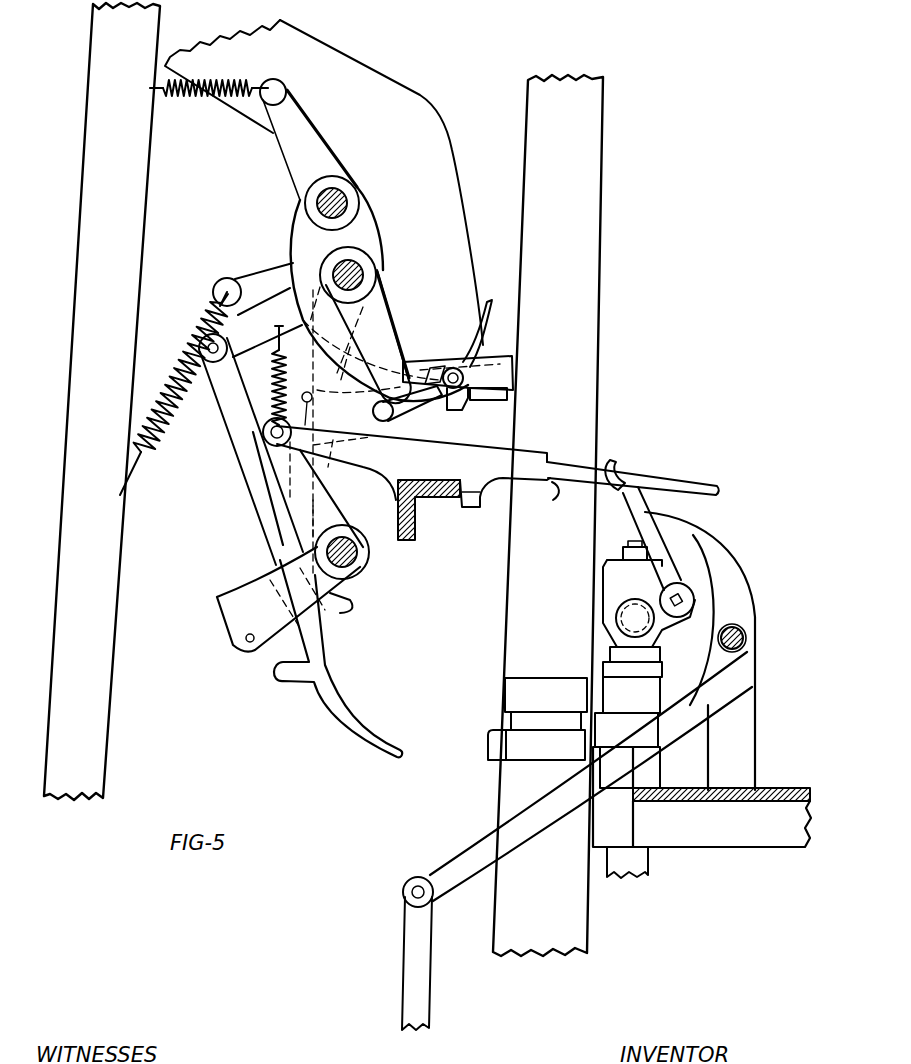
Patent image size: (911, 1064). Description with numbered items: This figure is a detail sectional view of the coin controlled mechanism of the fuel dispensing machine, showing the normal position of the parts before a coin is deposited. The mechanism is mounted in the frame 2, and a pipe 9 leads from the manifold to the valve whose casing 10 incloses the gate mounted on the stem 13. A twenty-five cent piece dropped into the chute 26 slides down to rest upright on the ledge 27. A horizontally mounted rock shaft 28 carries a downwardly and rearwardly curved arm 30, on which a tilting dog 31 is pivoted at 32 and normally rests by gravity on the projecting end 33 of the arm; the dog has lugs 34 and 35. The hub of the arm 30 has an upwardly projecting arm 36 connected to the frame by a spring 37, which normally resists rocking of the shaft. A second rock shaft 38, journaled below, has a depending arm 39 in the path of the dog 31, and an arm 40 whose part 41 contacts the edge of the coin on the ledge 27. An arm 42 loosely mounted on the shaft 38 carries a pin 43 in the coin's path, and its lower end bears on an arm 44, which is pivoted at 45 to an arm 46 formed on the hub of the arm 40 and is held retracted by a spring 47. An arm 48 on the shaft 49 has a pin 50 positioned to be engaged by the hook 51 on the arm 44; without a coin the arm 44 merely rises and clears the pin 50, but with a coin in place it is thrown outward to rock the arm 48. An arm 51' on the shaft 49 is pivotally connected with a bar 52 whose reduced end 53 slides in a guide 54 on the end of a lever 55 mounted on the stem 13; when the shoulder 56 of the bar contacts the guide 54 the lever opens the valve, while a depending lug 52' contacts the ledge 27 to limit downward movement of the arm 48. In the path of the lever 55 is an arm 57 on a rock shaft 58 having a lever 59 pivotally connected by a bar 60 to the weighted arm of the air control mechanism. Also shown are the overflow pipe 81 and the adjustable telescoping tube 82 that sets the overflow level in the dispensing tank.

The frame 2 is at (106, 620).
The pipes 9 is at (652, 866).
The casing 10 is at (605, 592).
The stem 13 is at (680, 597).
The chute 26 is at (405, 107).
The ledge 27 is at (370, 462).
The rock shaft 28 is at (318, 203).
The arm 30 is at (379, 294).
The tilting dog 31 is at (503, 362).
The pivot 32 is at (458, 370).
The projecting end 33 is at (488, 392).
The lug 34 is at (430, 370).
The lug 35 is at (462, 406).
The upwardly projecting arm 36 is at (310, 145).
The spring 37 is at (195, 99).
The rock shaft 38 is at (365, 270).
The depending arm 39 is at (368, 336).
The arm 40 is at (398, 328).
The part 41 is at (395, 416).
The arm 42 is at (304, 388).
The pin 43 is at (320, 409).
The arm 44 is at (253, 480).
The pivot 45 is at (210, 357).
The arm 46 is at (257, 310).
The spring 47 is at (276, 382).
The arm 48 is at (288, 599).
The shaft 49 is at (348, 565).
The pin 50 is at (247, 646).
The hook 51 is at (327, 594).
The arm 51' is at (332, 520).
The bar 52 is at (406, 462).
The depending lug 52' is at (473, 513).
The reduced end 53 is at (660, 480).
The guide 54 is at (608, 487).
The lever 55 is at (650, 537).
The shoulder 56 is at (555, 488).
The arm 57 is at (740, 565).
The rock shaft 58 is at (748, 636).
The lever 59 is at (591, 776).
The bar 60 is at (430, 968).
The pipes 81 is at (583, 907).
The tubes 82 is at (518, 650).